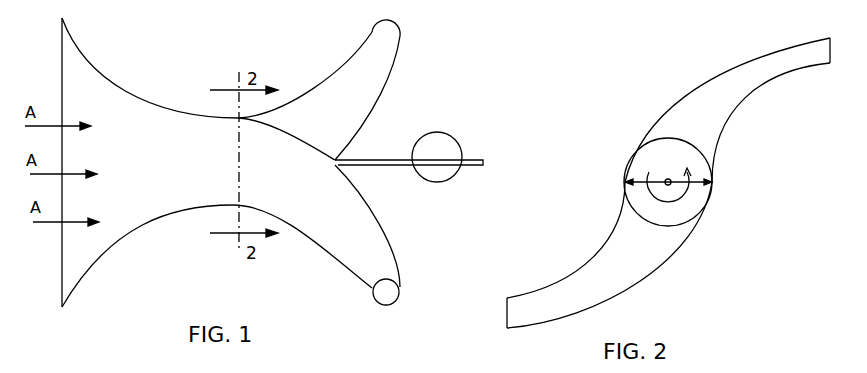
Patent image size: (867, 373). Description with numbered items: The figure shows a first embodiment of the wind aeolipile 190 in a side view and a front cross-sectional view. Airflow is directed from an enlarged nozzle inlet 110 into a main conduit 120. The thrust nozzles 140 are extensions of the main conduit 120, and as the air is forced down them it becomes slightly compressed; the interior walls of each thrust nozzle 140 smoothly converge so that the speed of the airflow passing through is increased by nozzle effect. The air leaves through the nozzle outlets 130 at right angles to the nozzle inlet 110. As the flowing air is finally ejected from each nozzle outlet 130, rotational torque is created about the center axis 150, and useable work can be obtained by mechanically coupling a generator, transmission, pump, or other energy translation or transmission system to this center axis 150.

In FIG. 1, the nozzle inlet 110 is at (58, 282).
In FIG. 1, the main conduit 120 is at (117, 220).
In FIG. 1, the nozzle outlet 130 is at (385, 292).
In FIG. 2, the nozzle outlet 130 is at (832, 55).
In FIG. 1, the thrust nozzle 140 is at (368, 53).
In FIG. 2, the thrust nozzle 140 is at (733, 56).
In FIG. 1, the center axis 150 is at (470, 162).
In FIG. 2, the center axis 150 is at (668, 179).
In FIG. 1, the aeolipile 190 is at (172, 100).